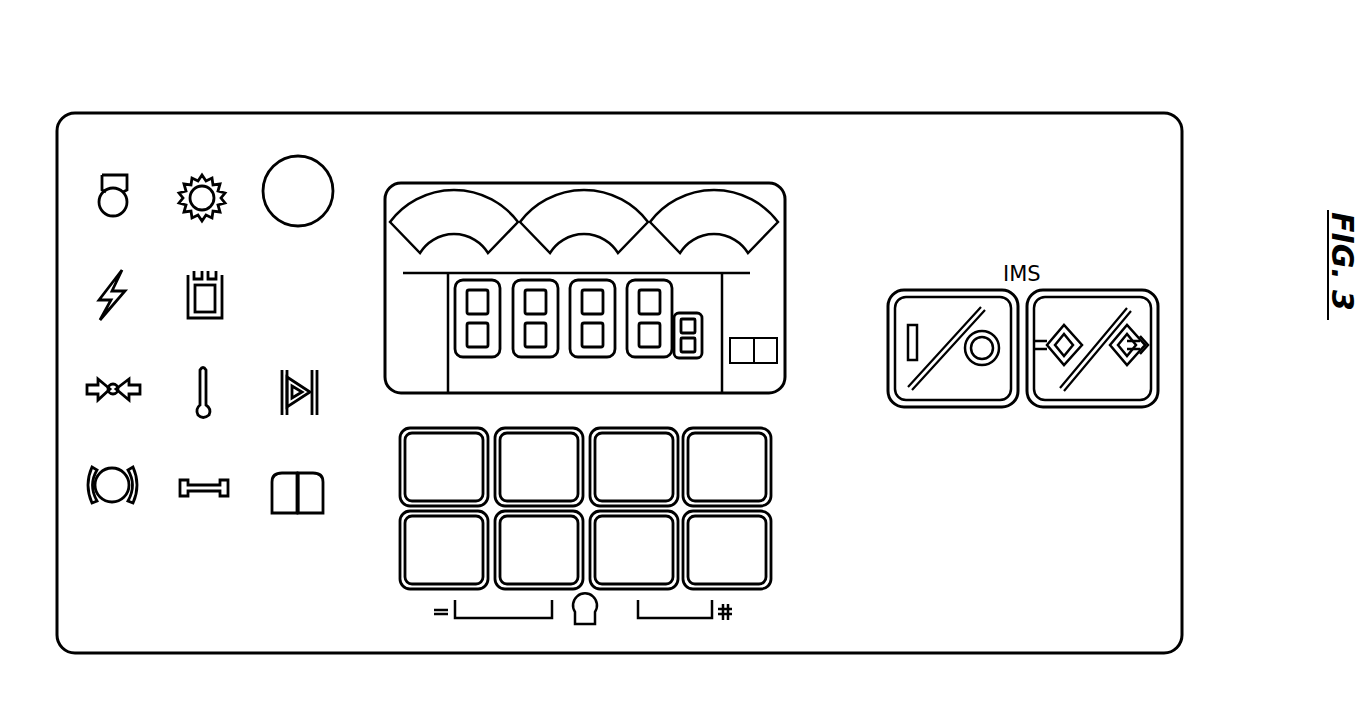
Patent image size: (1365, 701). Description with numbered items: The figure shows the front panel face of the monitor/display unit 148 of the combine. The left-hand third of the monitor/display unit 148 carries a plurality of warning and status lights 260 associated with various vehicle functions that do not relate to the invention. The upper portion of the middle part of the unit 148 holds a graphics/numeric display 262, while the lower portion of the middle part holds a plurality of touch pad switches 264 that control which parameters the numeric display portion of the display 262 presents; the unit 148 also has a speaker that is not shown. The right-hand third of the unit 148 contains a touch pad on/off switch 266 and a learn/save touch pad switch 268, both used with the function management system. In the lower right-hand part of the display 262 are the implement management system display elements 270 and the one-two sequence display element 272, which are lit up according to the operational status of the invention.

The monitor/display unit 148 is at (650, 103).
The warning and status lights 260 is at (362, 148).
The graphics/numeric display 262 is at (664, 297).
The touch pad switches 264 is at (790, 572).
The touch pad on/off switch 266 is at (920, 292).
The learn/save touch pad switch 268 is at (1083, 408).
The implement management system (IMS) display elements 270 is at (809, 312).
The one-two sequence display element 272 is at (790, 387).